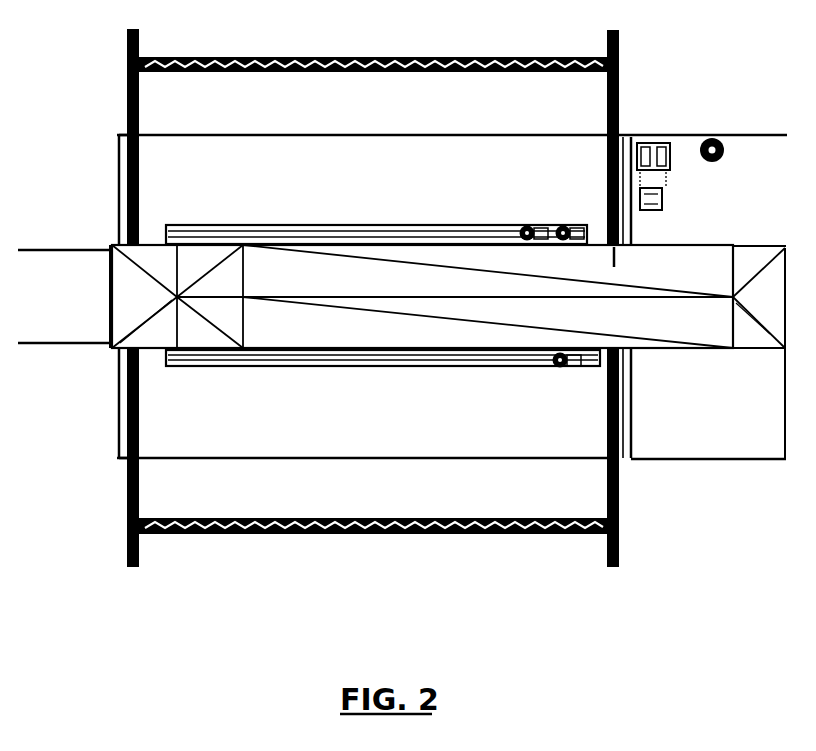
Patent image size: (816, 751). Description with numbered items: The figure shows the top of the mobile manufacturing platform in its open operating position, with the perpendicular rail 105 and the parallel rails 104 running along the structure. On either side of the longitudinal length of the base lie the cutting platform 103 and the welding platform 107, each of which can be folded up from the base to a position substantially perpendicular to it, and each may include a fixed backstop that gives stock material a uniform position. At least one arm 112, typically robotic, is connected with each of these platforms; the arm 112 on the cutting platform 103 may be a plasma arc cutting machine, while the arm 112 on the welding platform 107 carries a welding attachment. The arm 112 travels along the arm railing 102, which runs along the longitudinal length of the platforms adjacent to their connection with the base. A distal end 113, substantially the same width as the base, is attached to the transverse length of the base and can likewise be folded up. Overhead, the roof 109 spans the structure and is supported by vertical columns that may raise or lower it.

The arm railing 102 is at (434, 366).
The cutting platform 103 is at (452, 298).
The parallel rails 104 is at (502, 537).
The perpendicular rail 105 is at (620, 100).
The welding platform 107 is at (453, 172).
The roof 109 is at (449, 296).
The arm 112 is at (562, 369).
The distal end 113 is at (65, 296).